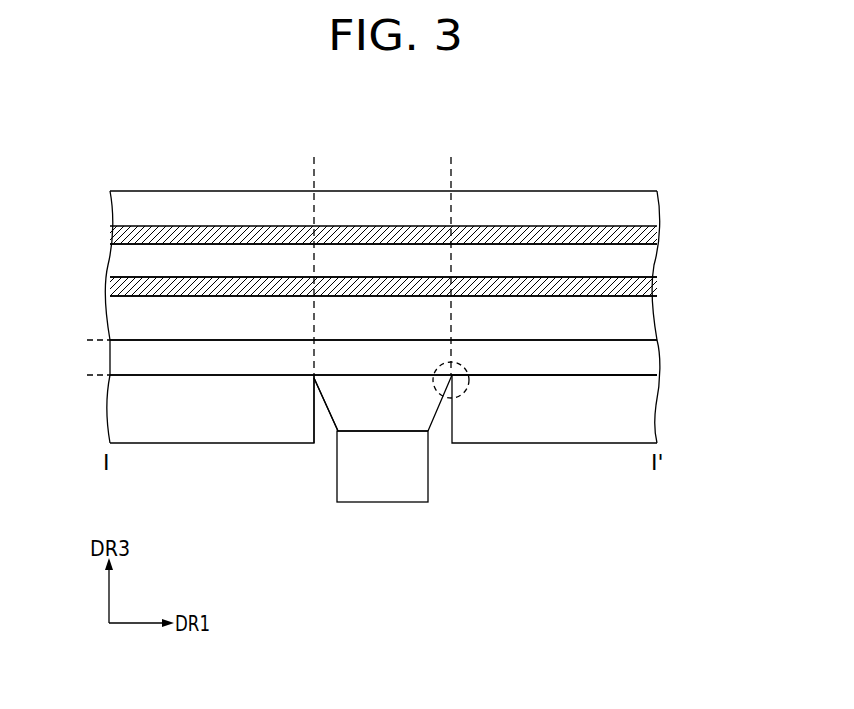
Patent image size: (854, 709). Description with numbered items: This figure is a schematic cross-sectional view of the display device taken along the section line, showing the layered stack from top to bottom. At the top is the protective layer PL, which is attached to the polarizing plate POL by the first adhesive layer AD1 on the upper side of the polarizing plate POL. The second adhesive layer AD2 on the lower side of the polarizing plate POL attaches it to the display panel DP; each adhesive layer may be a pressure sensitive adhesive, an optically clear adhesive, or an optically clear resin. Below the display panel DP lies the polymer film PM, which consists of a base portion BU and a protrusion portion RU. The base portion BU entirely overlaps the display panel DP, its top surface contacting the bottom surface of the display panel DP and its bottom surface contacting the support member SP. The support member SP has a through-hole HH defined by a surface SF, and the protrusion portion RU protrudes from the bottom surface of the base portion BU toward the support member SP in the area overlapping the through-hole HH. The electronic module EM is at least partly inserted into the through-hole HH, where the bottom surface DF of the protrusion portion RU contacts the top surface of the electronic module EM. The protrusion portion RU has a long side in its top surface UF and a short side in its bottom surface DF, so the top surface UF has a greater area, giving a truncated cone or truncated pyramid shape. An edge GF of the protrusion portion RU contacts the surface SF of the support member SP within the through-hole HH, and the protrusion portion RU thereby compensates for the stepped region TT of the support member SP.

The protective layer PL is at (648, 210).
The first adhesive layer AD1 is at (648, 233).
The polarizing plate POL is at (648, 262).
The second adhesive layer AD2 is at (648, 287).
The display panel DP is at (648, 320).
The base portion BU is at (648, 357).
The polymer film PM is at (91, 340).
The support member SP is at (645, 410).
The through-hole HH is at (451, 163).
The electronic module EM is at (413, 493).
The protrusion portion RU is at (370, 422).
The bottom surface of the protrusion portion DF is at (353, 433).
The edge of the protrusion portion GF is at (314, 380).
The surface of the support member SF is at (314, 415).
The stepped region TT is at (467, 387).
The top surface of the protrusion portion UF is at (420, 377).